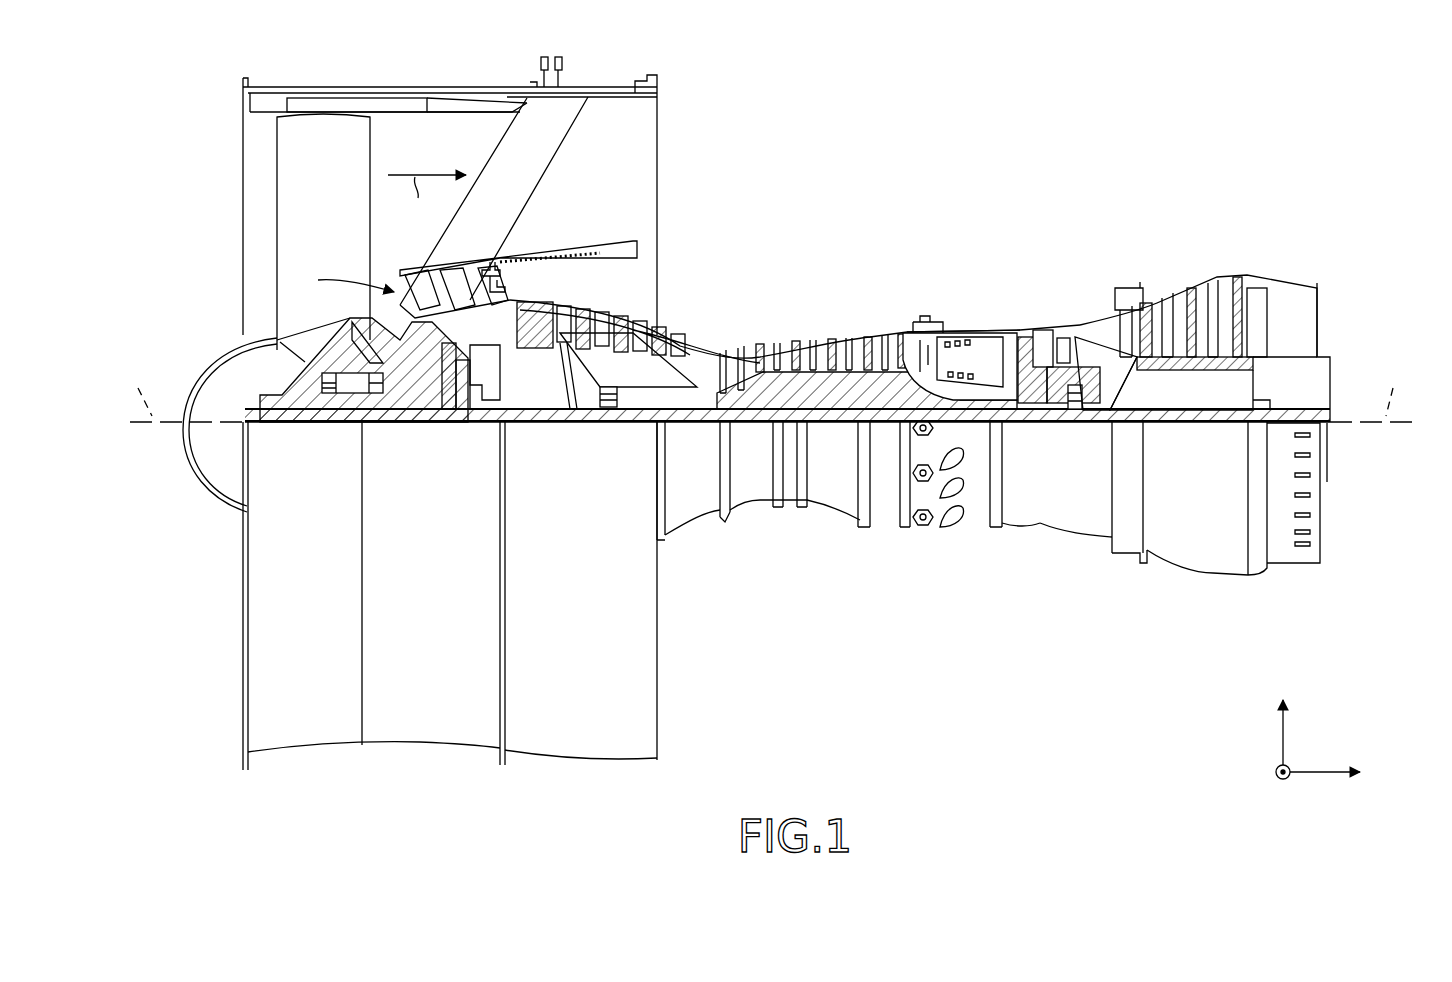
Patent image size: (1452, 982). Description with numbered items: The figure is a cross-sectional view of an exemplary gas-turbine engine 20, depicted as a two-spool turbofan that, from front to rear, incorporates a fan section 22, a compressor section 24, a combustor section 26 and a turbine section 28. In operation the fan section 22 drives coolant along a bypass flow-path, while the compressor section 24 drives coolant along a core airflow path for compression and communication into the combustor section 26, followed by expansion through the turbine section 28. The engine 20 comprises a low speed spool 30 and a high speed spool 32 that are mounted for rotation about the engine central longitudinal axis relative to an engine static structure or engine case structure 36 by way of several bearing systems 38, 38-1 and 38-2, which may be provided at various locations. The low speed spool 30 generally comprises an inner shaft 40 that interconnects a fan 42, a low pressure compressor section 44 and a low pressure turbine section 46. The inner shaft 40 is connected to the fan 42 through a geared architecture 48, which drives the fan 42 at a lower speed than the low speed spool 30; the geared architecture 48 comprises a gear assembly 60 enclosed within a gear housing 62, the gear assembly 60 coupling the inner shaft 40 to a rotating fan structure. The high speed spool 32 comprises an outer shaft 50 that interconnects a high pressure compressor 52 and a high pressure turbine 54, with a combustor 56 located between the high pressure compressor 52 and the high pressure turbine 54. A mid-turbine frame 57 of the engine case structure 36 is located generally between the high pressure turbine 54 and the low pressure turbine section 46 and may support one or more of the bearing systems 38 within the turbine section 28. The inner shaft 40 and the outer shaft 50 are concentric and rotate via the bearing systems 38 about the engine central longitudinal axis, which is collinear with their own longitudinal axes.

The gas-turbine engine 20 is at (1017, 128).
The fan section 22 is at (497, 66).
The compressor section 24 is at (505, 207).
The combustor section 26 is at (1022, 207).
The turbine section 28 is at (1253, 207).
The low speed spool 30 is at (841, 437).
The high speed spool 32 is at (880, 375).
The engine static structure 36 is at (888, 505).
The bearing system 38 is at (1083, 425).
The bearing system 38-1 is at (333, 397).
The bearing system 38-2 is at (605, 415).
The inner shaft 40 is at (682, 425).
The fan 42 is at (305, 224).
The low pressure compressor section 44 is at (581, 318).
The low pressure turbine section 46 is at (1185, 298).
The geared architecture 48 is at (459, 442).
The outer shaft 50 is at (963, 415).
The high pressure compressor 52 is at (815, 345).
The high pressure turbine 54 is at (1040, 330).
The combustor 56 is at (960, 355).
The mid-turbine frame 57 is at (1083, 320).
The gear assembly 60 is at (458, 390).
The gear housing 62 is at (458, 360).